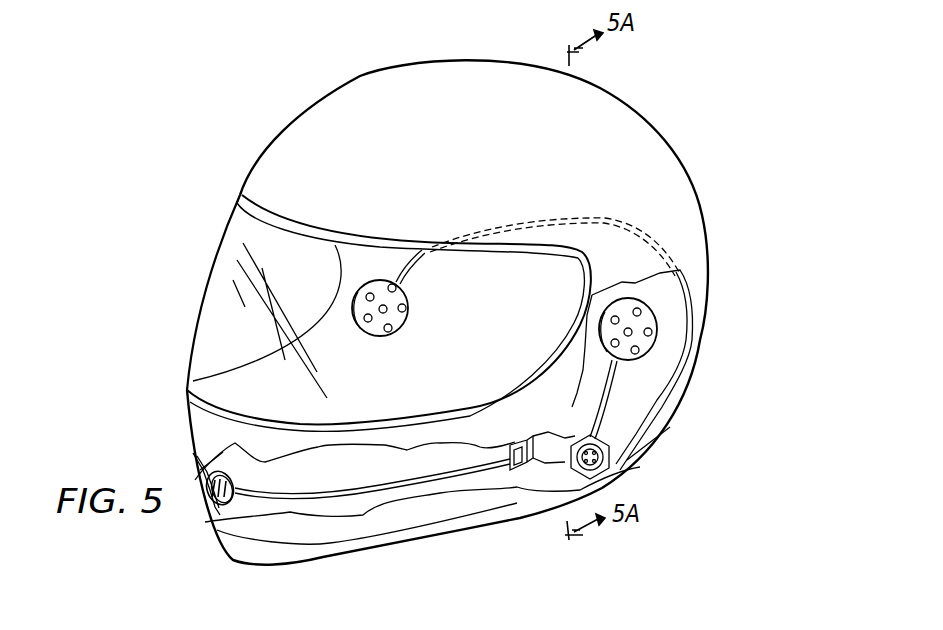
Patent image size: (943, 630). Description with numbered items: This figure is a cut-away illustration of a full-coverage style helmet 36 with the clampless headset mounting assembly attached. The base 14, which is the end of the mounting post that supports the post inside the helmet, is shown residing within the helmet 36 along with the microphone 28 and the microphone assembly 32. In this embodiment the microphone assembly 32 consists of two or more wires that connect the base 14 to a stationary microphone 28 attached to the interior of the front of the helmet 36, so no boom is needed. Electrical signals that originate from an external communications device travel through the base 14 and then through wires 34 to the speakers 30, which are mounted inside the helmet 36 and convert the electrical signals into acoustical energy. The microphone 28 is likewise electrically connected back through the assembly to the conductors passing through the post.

The base 14 is at (512, 430).
The microphone 28 is at (247, 474).
The speakers 30 is at (407, 325).
The microphone assembly 32 is at (398, 480).
The wires 34 is at (405, 258).
The helmet 36 is at (485, 153).